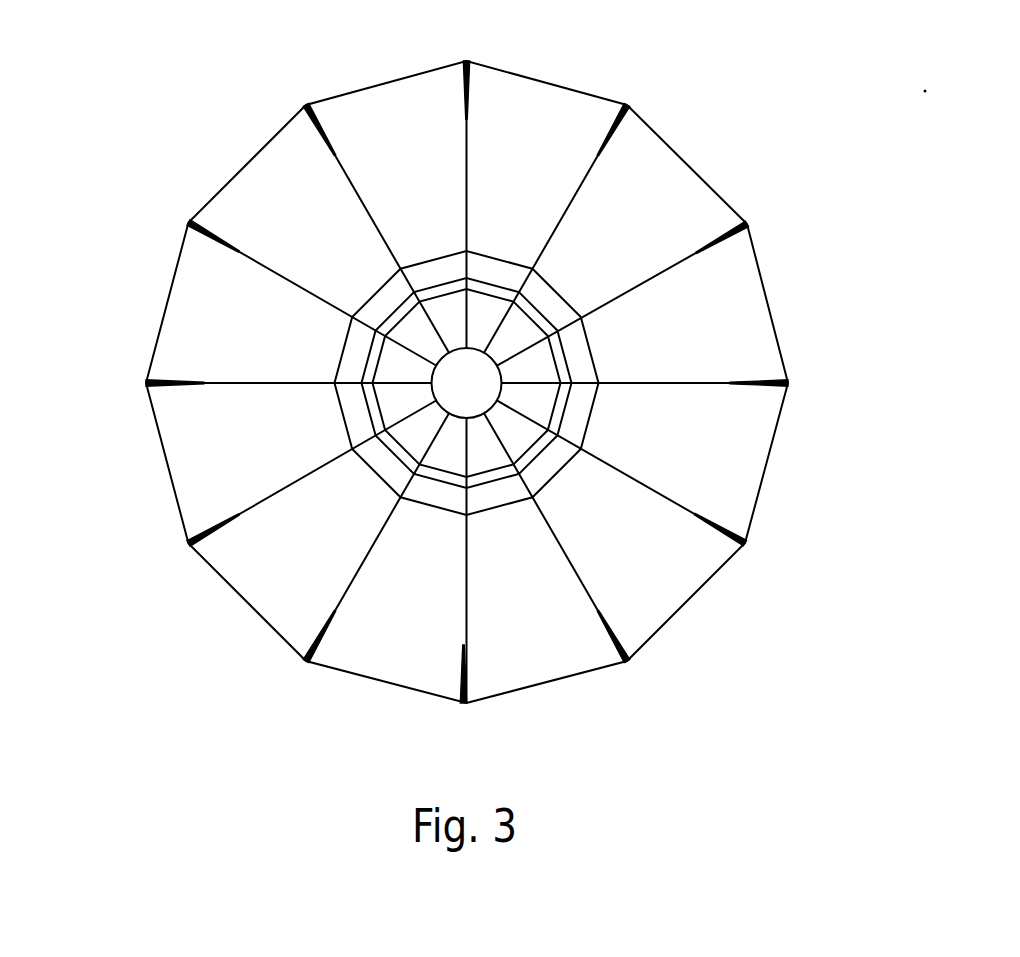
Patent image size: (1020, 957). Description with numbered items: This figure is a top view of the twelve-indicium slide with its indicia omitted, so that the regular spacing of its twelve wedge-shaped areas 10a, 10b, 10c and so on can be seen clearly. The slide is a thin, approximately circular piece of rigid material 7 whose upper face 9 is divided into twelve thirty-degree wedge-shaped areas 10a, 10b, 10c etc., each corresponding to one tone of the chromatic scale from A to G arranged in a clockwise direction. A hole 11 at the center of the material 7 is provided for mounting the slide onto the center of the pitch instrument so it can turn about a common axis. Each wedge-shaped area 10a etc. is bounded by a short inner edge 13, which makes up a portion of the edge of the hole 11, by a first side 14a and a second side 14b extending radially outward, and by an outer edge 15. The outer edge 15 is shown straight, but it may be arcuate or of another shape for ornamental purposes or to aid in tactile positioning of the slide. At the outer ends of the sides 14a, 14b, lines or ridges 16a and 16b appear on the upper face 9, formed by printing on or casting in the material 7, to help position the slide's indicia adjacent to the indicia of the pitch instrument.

The rigid material 7 is at (227, 208).
The upper face 9 is at (403, 228).
The wedge-shaped area 10a is at (633, 175).
The wedge-shaped area 10b is at (715, 288).
The wedge-shaped area 10c is at (733, 418).
The hole 11 is at (463, 390).
The inner edge 13 is at (434, 386).
The first side 14a is at (563, 210).
The second side 14b is at (623, 297).
The outer edge 15 is at (703, 177).
The line or ridge 16a is at (608, 100).
The line or ridge 16b is at (735, 220).